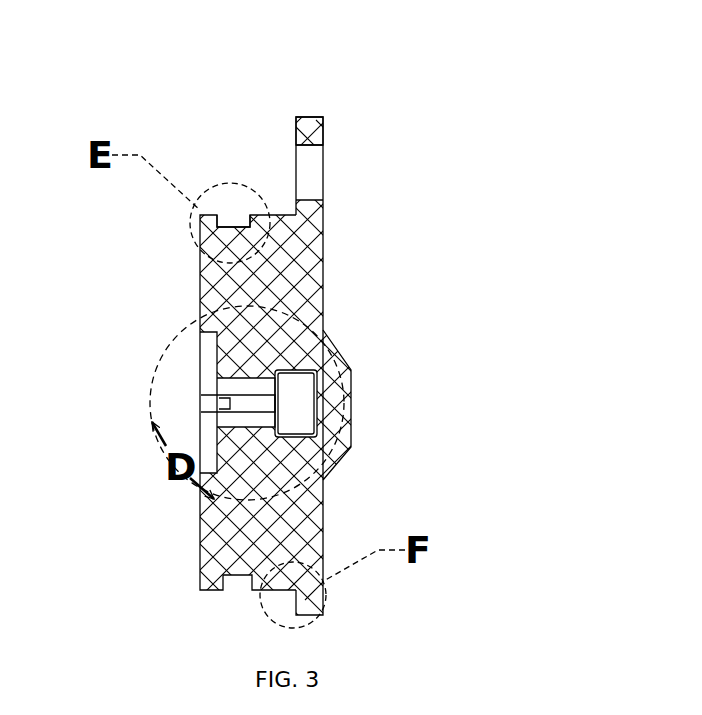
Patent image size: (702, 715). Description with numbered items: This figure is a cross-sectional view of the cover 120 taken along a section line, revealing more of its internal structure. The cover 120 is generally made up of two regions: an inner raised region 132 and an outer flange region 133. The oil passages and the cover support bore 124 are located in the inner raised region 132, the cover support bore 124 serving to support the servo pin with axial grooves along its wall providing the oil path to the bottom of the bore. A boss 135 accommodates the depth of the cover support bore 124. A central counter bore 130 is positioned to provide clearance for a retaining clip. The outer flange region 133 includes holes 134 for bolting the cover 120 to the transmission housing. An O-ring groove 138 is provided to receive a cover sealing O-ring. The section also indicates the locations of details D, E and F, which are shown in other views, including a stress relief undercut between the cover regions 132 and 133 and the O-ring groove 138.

The cover 120 is at (351, 320).
The cover support bore 124 is at (300, 390).
The central counter bore 130 is at (198, 358).
The inner raised region 132 is at (200, 545).
The outer flange region 133 is at (320, 117).
The holes 134 is at (318, 172).
The boss 135 is at (352, 415).
The O-ring groove 138 is at (235, 222).